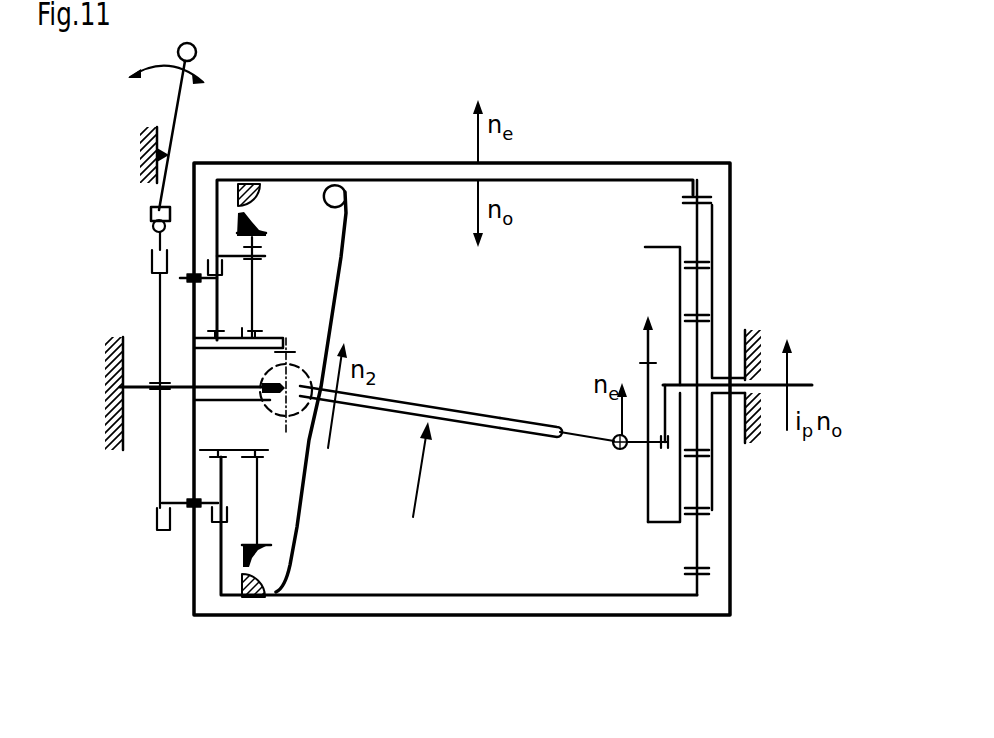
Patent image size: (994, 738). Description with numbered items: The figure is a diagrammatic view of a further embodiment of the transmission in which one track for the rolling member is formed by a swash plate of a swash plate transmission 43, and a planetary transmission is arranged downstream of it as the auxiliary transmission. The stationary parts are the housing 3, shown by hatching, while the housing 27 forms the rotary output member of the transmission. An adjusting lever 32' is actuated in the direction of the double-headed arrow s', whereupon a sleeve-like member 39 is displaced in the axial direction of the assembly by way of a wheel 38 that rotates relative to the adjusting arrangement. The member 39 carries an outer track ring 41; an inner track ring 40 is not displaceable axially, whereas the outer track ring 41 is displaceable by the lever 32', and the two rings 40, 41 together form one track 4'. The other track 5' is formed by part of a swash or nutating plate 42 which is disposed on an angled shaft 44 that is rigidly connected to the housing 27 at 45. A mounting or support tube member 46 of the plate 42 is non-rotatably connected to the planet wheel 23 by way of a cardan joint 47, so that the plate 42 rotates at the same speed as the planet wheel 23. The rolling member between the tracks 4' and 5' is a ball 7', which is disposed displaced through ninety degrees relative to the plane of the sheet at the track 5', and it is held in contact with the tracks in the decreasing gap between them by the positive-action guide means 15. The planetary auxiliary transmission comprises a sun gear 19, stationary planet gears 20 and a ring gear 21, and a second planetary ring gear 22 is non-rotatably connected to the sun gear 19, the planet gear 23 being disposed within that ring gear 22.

The housing 3 is at (147, 180).
The track 4' is at (297, 136).
The track 5' is at (370, 121).
The ball 7' is at (322, 443).
The positive-action guide means 15 is at (283, 330).
The sun gear 19 is at (697, 348).
The planet gears 20 is at (697, 223).
The ring gear 21 is at (703, 195).
The second planetary ring gear 22 is at (650, 248).
The planet gear 23 is at (647, 475).
The housing 27 is at (545, 163).
The adjusting lever 32' is at (197, 136).
The wheel 38 is at (157, 318).
The sleeve-like member 39 is at (577, 178).
The inner track ring 40 is at (250, 558).
The outer track ring 41 is at (252, 593).
The swash plate 42 is at (343, 257).
The swash plate transmission 43 is at (416, 485).
The angled shaft 44 is at (438, 408).
The rigid connection 45 is at (258, 394).
The support tube member 46 is at (545, 422).
The cardan joint 47 is at (615, 450).